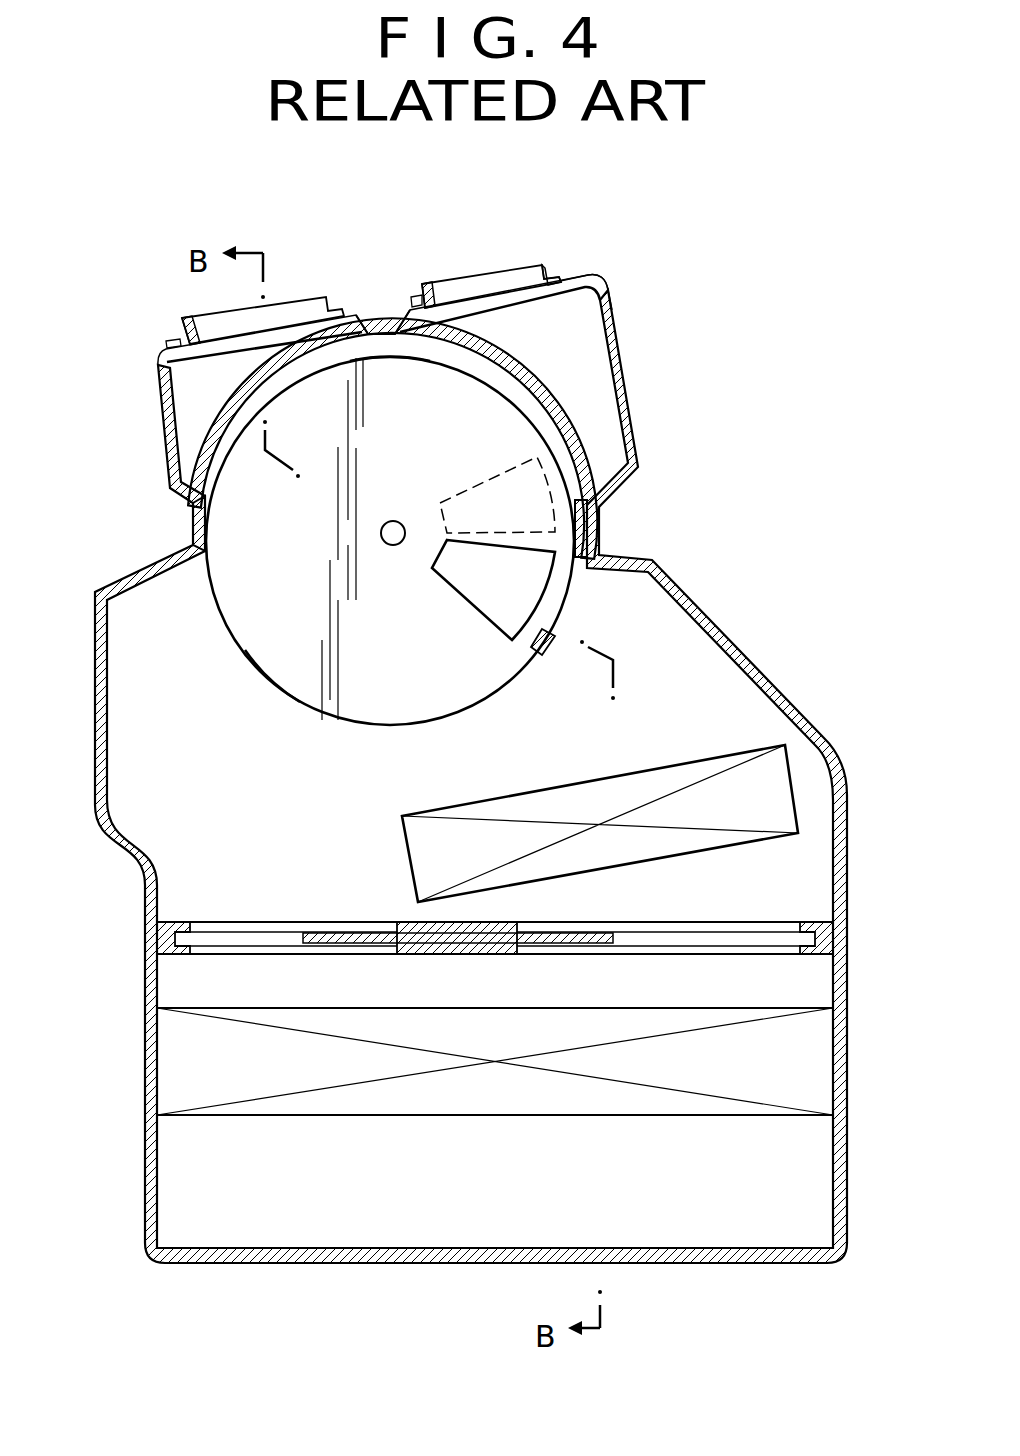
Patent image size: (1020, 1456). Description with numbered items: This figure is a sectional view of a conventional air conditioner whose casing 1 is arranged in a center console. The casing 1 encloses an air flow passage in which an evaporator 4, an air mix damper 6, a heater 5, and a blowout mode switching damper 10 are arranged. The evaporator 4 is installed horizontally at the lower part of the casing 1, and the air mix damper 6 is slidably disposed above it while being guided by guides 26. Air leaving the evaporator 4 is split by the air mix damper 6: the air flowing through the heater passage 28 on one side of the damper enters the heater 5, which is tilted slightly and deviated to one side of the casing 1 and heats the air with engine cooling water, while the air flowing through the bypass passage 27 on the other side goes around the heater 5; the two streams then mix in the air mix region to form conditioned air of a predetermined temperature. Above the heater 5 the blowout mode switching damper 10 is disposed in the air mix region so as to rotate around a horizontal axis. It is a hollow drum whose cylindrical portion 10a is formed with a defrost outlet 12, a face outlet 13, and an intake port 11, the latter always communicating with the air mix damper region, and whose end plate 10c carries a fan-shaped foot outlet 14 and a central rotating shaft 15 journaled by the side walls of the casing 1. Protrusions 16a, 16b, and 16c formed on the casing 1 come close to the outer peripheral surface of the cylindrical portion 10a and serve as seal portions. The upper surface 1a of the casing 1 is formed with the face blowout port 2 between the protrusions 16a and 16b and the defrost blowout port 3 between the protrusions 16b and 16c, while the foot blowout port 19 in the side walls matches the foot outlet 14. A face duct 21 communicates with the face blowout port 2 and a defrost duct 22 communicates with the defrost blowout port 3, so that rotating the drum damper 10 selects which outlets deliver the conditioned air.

The casing 1 is at (622, 341).
The upper surface 1a is at (603, 284).
The face blowout port 2 is at (294, 326).
The defrost blowout port 3 is at (482, 292).
The evaporator 4 is at (810, 1072).
The heater 5 is at (705, 760).
The air mix damper 6 is at (565, 945).
The blowout mode switching damper 10 is at (532, 376).
The cylindrical portion 10a is at (423, 358).
The end plate 10c is at (267, 650).
The intake port 11 is at (333, 717).
The defrost outlet 12 is at (578, 603).
The face outlet 13 is at (245, 420).
The foot outlet 14 is at (480, 587).
The rotating shaft 15 is at (386, 547).
The protrusion 16a is at (192, 528).
The protrusion 16b is at (386, 330).
The protrusion 16c is at (600, 528).
The foot blowout port 19 is at (488, 492).
The face duct 21 is at (178, 345).
The defrost duct 22 is at (547, 265).
The guides 26 is at (185, 922).
The bypass passage 27 is at (302, 897).
The heater passage 28 is at (722, 897).